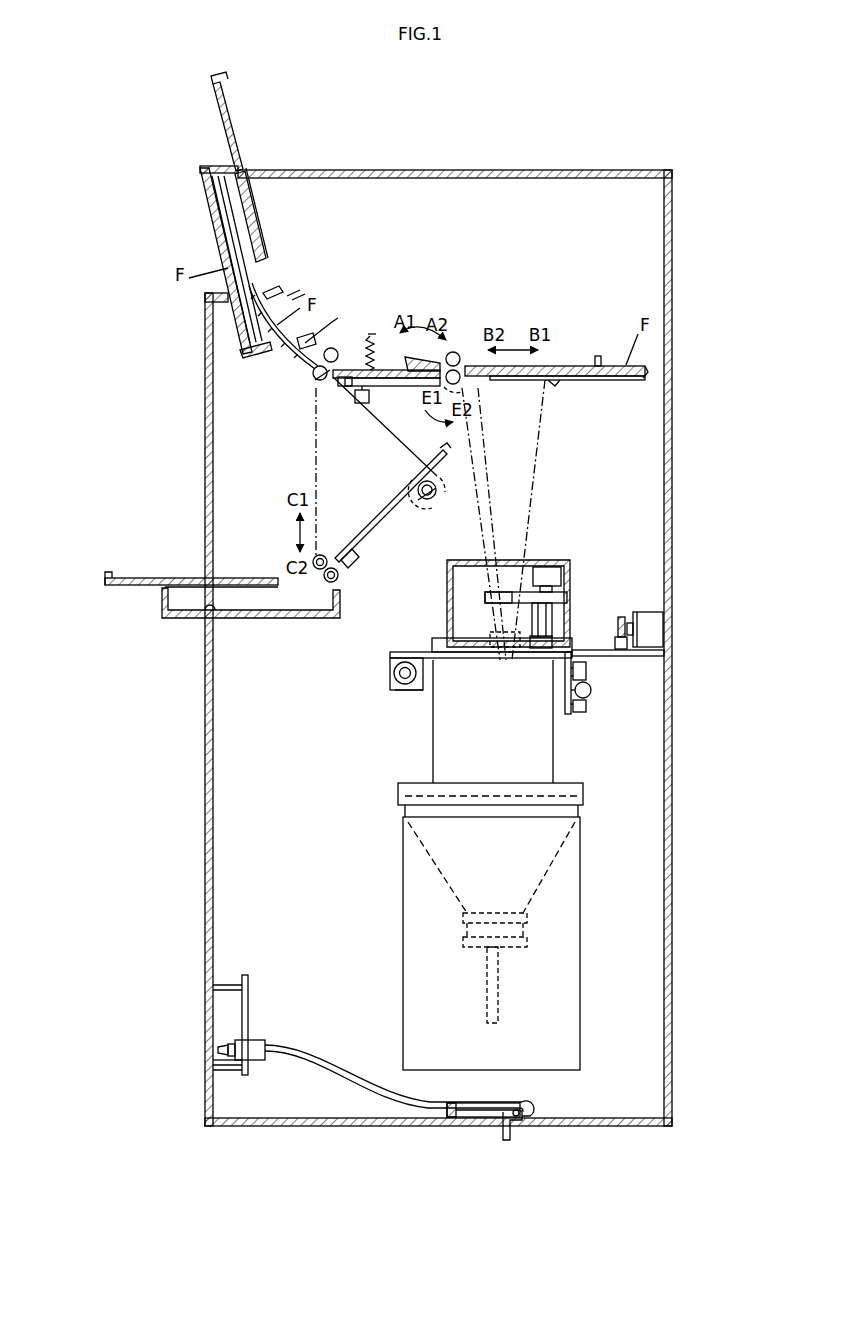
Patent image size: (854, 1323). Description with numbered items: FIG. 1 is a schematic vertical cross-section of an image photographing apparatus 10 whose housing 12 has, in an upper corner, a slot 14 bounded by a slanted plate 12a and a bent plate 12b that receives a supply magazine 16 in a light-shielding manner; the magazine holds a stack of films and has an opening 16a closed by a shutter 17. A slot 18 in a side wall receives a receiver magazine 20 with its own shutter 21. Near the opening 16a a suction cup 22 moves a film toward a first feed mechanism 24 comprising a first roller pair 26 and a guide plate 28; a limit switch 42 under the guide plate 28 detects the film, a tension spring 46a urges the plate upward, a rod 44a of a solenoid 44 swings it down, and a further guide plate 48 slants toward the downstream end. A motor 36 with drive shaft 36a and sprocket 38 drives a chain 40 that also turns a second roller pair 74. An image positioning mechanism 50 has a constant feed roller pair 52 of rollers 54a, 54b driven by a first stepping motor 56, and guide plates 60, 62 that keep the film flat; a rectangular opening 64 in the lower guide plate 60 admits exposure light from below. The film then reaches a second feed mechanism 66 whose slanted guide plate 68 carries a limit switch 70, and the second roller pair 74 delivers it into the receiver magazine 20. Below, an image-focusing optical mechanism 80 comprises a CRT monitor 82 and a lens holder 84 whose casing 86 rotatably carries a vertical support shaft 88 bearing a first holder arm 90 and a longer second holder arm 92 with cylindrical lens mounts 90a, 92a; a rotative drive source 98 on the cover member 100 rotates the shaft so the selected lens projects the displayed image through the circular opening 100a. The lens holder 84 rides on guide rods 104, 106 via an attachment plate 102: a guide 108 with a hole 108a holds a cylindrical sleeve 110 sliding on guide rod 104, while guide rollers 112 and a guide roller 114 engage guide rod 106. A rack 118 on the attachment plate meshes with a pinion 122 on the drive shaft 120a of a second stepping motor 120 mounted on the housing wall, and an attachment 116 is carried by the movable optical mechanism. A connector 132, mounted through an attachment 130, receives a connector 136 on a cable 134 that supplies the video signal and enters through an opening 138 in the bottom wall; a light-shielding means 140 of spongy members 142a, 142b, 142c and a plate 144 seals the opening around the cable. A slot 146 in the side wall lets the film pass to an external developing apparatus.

The image photographing apparatus 10 is at (463, 619).
The housing 12 is at (668, 560).
The slanted plate 12a is at (258, 250).
The bent plate 12b is at (252, 360).
The slot 14 is at (240, 168).
The supply magazine 16 is at (210, 212).
The opening 16a is at (307, 383).
The shutter 17 is at (226, 110).
The slot 18 is at (205, 612).
The receiver magazine 20 is at (163, 604).
The shutter 21 is at (140, 576).
The suction cup 22 is at (283, 289).
The first feed mechanism 24 is at (381, 340).
The first roller pair 26 is at (306, 395).
The guide plate 28 is at (398, 392).
The motor 36 is at (440, 513).
The drive shaft 36a is at (436, 496).
The sprocket 38 is at (426, 507).
The chain 40 is at (314, 468).
The limit switch 42 is at (350, 386).
The solenoid 44 is at (364, 404).
The rod 44a is at (370, 388).
The tension spring 46a is at (372, 334).
The guide plate 48 is at (448, 354).
The image positioning mechanism 50 is at (537, 322).
The constant feed roller pair 52 is at (457, 352).
The roller 54a is at (460, 392).
The roller 54b is at (461, 370).
The first stepping motor 56 is at (503, 520).
The guide plate 60 is at (627, 380).
The guide plate 62 is at (578, 366).
The rectangular opening 64 is at (553, 384).
The second feed mechanism 66 is at (383, 548).
The slanted guide plate 68 is at (416, 480).
The limit switch 70 is at (344, 575).
The second roller pair 74 is at (322, 548).
The image-focusing optical mechanism 80 is at (395, 813).
The CRT monitor 82 is at (570, 838).
The lens holder 84 is at (558, 739).
The casing 86 is at (440, 759).
The vertical support shaft 88 is at (552, 620).
The first holder arm 90 is at (537, 649).
The lens mount 90a is at (503, 648).
The second holder arm 92 is at (502, 593).
The lens mount 92a is at (485, 597).
The rotative drive source 98 is at (561, 575).
The cover member 100 is at (517, 611).
The circular opening 100a is at (524, 560).
The attachment plate 102 is at (447, 658).
The guide rod 104 is at (390, 668).
The guide rod 106 is at (590, 685).
The guide 108 is at (416, 692).
The hole 108a is at (407, 692).
The cylindrical sleeve 110 is at (394, 678).
The guide rollers 112 is at (587, 679).
The guide roller 114 is at (584, 708).
The attachment 116 is at (628, 650).
The rack 118 is at (626, 651).
The second stepping motor 120 is at (662, 624).
The drive shaft 120a is at (629, 620).
The pinion 122 is at (621, 615).
The attachment 130 is at (248, 998).
The connector 132 is at (251, 1066).
The cable 134 is at (327, 1065).
The connector 136 is at (254, 1040).
The opening 138 is at (505, 1128).
The light-shielding means 140 is at (490, 1132).
The light-shielding spongy member 142a is at (448, 1118).
The light-shielding spongy member 142b is at (462, 1118).
The light-shielding spongy member 142c is at (522, 1118).
The plate 144 is at (532, 1097).
The slot 146 is at (672, 370).